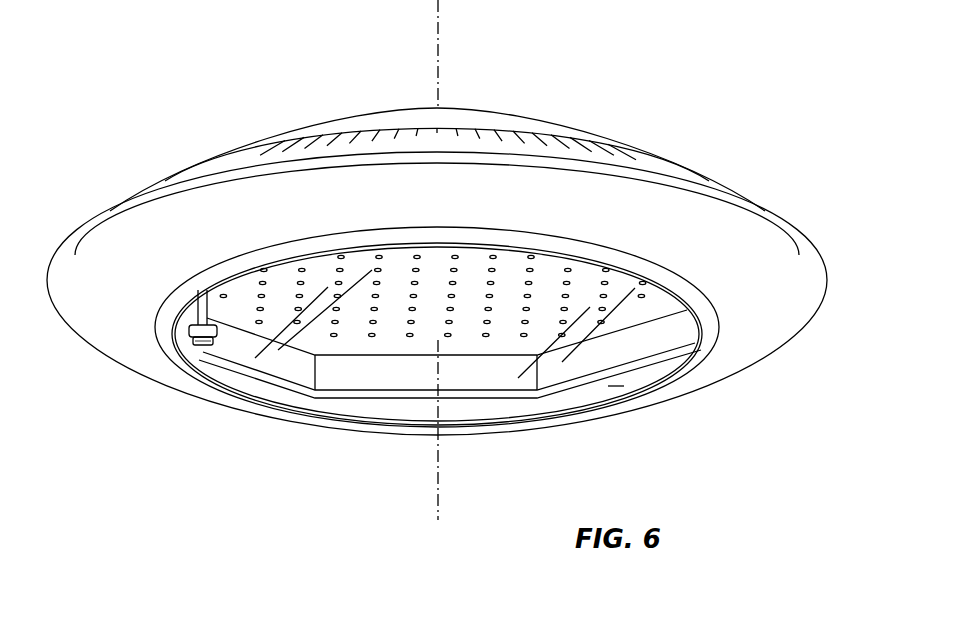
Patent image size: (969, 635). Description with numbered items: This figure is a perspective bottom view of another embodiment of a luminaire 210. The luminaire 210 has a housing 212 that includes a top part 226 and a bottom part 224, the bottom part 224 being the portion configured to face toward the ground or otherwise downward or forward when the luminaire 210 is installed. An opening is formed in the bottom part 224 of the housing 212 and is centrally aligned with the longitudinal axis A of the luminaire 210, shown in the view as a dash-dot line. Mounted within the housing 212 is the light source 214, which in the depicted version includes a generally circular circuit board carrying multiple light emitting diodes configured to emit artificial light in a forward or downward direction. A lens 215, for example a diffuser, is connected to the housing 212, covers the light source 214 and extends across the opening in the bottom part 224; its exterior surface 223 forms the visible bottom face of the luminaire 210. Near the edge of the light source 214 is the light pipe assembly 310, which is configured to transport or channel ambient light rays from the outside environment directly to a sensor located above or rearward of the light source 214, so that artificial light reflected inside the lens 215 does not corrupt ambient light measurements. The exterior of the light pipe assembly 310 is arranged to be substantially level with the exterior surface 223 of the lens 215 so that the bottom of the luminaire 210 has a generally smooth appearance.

The luminaire 210 is at (243, 46).
The housing 212 is at (803, 203).
The top part 226 is at (500, 118).
The bottom part 224 is at (777, 323).
The exterior surface 223 is at (616, 388).
The lens 215 is at (558, 409).
The light source 214 is at (500, 355).
The light pipe assembly 310 is at (200, 359).
The longitudinal axis A is at (438, 24).